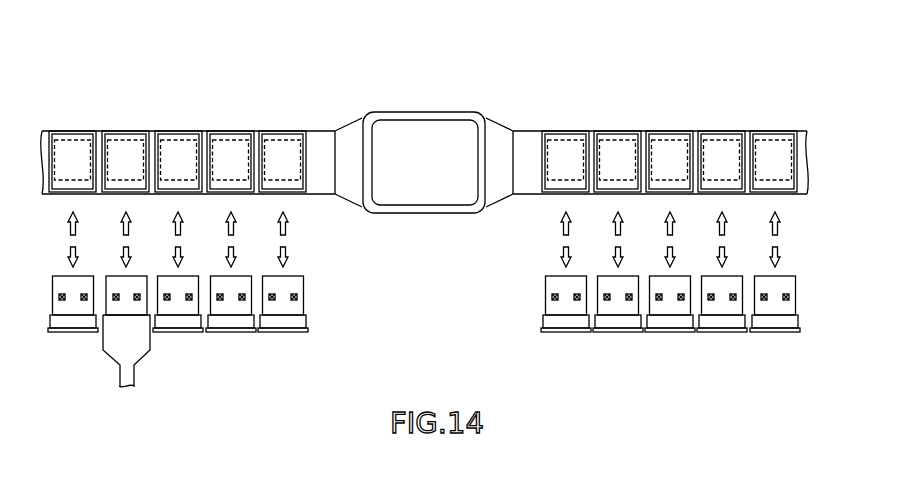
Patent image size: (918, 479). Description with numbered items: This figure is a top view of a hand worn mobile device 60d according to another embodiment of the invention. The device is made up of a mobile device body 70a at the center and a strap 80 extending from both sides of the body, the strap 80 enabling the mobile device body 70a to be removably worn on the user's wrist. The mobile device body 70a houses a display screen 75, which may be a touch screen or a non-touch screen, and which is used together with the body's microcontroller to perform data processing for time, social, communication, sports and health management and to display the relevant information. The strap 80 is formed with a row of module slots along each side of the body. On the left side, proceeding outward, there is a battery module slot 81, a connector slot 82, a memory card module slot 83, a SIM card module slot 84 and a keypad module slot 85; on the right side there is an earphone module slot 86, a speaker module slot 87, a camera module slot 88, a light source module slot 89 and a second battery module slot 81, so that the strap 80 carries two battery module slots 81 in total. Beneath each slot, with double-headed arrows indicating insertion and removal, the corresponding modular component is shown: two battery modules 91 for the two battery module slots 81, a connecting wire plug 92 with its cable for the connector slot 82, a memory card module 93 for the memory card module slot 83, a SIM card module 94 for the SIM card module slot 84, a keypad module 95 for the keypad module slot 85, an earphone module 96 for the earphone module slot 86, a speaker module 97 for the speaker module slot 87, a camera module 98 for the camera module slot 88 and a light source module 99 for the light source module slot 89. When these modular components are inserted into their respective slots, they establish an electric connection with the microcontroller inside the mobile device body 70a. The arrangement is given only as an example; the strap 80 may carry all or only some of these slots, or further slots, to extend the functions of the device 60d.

The hand worn mobile device 60d is at (424, 143).
The mobile device body 70a is at (422, 213).
The display screen 75 is at (427, 100).
The strap 80 is at (324, 137).
The battery module slot 81 is at (423, 142).
The connector slot 82 is at (125, 142).
The memory card module slot 83 is at (178, 142).
The SIM card module slot 84 is at (230, 142).
The keypad module slot 85 is at (282, 142).
The earphone module slot 86 is at (565, 142).
The speaker module slot 87 is at (617, 142).
The camera module slot 88 is at (669, 142).
The light source module slot 89 is at (721, 142).
The battery module 91 is at (427, 272).
The connecting wire plug 92 is at (130, 299).
The memory card module 93 is at (181, 272).
The SIM card module 94 is at (234, 272).
The keypad module 95 is at (286, 272).
The earphone module 96 is at (570, 272).
The speaker module 97 is at (622, 272).
The camera module 98 is at (674, 272).
The light source module 99 is at (726, 272).